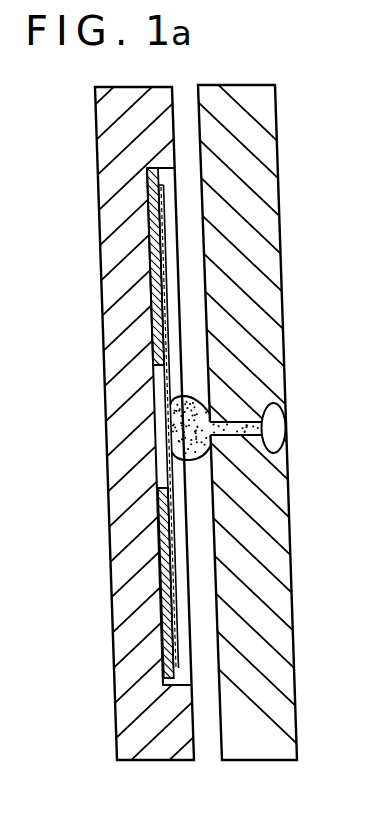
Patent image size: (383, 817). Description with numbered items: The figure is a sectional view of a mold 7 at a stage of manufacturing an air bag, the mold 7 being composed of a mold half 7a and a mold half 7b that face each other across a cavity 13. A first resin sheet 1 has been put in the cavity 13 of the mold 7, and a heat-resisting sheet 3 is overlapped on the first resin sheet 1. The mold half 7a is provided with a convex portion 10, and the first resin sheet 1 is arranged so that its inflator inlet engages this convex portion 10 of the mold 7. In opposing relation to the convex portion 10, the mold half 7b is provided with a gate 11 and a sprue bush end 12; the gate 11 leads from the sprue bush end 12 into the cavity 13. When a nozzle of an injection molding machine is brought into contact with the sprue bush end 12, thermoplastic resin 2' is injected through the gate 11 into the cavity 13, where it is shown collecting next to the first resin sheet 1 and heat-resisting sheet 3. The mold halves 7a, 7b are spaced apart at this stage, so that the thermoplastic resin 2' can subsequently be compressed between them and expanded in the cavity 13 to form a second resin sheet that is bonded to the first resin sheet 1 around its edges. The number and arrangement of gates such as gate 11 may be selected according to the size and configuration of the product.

The first resin sheet 1 is at (148, 279).
The thermoplastic resin 2' is at (189, 372).
The heat-resisting sheet 3 is at (163, 204).
The mold 7 is at (198, 408).
The mold half 7a is at (127, 719).
The mold half 7b is at (287, 742).
The convex portion 10 is at (170, 403).
The gate 11 is at (233, 423).
The sprue bush end 12 is at (274, 452).
The cavity 13 is at (178, 534).